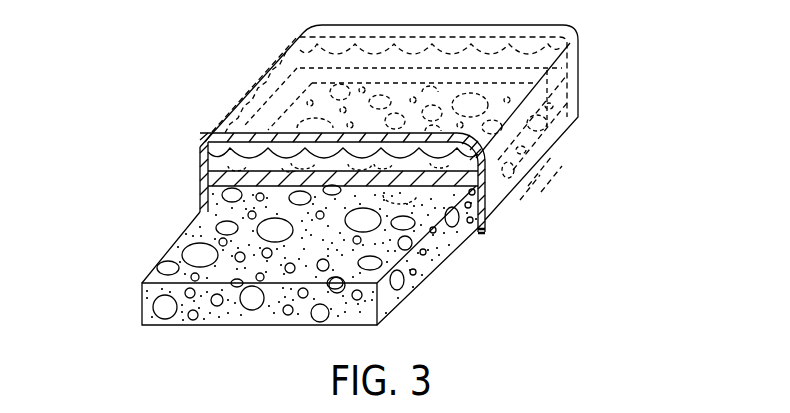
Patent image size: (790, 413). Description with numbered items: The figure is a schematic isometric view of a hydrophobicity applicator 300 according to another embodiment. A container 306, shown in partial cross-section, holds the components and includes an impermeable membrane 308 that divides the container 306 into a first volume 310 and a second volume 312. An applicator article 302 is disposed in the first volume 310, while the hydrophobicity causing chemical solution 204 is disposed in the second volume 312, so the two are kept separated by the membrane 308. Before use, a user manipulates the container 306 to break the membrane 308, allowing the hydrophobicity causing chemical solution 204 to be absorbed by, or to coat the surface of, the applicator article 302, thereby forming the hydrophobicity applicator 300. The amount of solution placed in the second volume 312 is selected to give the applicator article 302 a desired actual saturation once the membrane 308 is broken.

The hydrophobicity applicator 300 is at (165, 340).
The applicator article 302 is at (415, 277).
The container 306 is at (572, 75).
The impermeable membrane 308 is at (488, 178).
The first volume 310 is at (483, 235).
The second volume 312 is at (490, 170).
The hydrophobicity causing chemical solution 204 is at (232, 163).